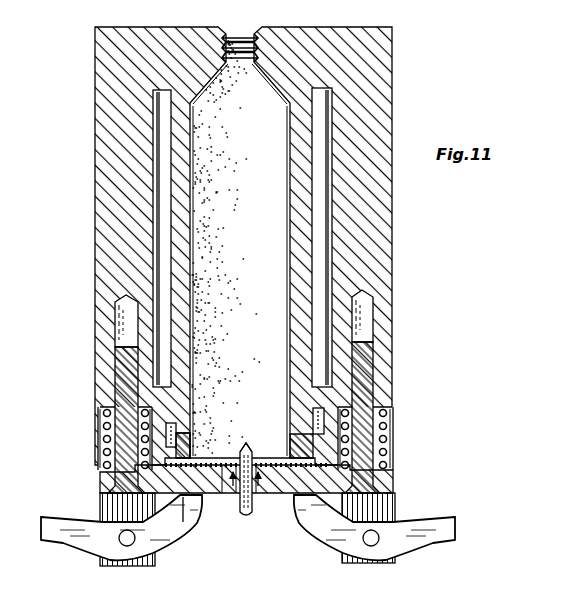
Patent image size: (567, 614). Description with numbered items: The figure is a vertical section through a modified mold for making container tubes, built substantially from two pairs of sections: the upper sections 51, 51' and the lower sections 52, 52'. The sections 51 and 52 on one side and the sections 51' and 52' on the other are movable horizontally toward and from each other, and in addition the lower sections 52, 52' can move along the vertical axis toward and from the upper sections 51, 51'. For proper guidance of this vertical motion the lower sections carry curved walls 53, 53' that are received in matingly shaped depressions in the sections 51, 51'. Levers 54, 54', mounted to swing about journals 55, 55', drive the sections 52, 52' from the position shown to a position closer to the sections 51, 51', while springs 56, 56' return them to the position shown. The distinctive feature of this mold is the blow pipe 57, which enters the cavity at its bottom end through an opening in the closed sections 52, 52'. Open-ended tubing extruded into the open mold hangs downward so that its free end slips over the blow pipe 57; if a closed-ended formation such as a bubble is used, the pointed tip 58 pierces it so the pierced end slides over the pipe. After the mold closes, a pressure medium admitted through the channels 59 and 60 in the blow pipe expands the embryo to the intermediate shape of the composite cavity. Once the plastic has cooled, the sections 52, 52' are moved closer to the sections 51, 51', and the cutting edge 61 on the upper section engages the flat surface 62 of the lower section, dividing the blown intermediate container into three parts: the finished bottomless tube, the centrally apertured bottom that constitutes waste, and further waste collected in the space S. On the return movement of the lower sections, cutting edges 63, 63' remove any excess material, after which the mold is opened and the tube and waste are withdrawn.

The section 51 is at (140, 248).
The section 51' is at (348, 248).
The section 52 is at (144, 484).
The section 52' is at (349, 479).
The curved wall 53 is at (101, 394).
The curved wall 53' is at (398, 391).
The lever 54 is at (106, 538).
The lever 54' is at (390, 532).
The journal 55 is at (117, 569).
The journal 55' is at (359, 569).
The spring 56 is at (98, 439).
The spring 56' is at (393, 439).
The blow pipe 57 is at (251, 520).
The pointed end 58 is at (246, 438).
The channel 59 is at (240, 446).
The channel 60 is at (254, 447).
The cutting edge 61 is at (194, 405).
The flat surface 62 is at (222, 497).
The cutting edge 63 is at (239, 520).
The cutting edge 63' is at (272, 509).
The space S is at (183, 497).